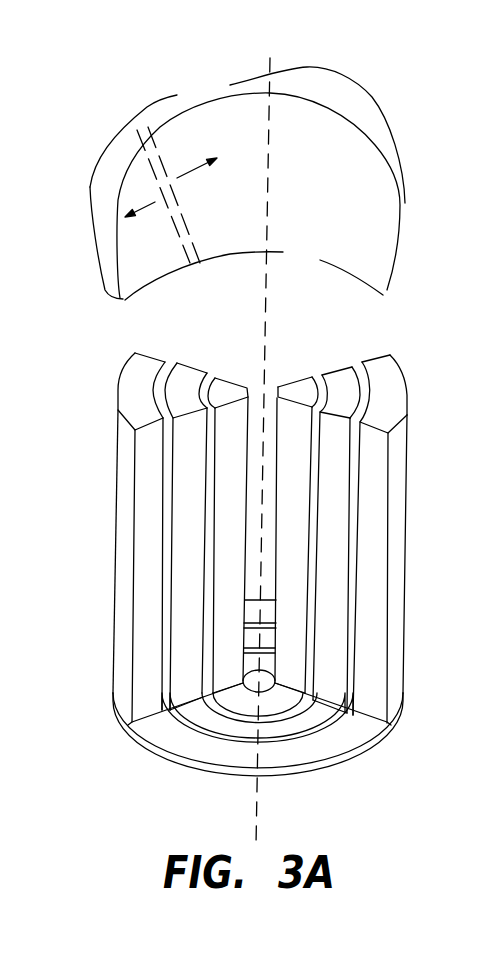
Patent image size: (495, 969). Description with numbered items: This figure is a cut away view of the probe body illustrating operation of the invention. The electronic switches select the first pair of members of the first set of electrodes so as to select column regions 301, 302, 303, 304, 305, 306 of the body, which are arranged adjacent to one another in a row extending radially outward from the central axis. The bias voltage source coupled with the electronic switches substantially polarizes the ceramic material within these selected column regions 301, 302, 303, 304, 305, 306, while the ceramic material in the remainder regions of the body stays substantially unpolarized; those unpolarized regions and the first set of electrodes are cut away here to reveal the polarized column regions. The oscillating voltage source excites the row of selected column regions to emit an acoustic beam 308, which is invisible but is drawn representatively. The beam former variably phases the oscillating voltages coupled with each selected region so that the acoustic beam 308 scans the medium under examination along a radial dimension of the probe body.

The column region 301 is at (134, 367).
The column region 302 is at (187, 378).
The column region 303 is at (228, 385).
The column region 304 is at (297, 387).
The column region 305 is at (340, 385).
The column region 306 is at (393, 377).
The acoustic beam 308 is at (136, 88).